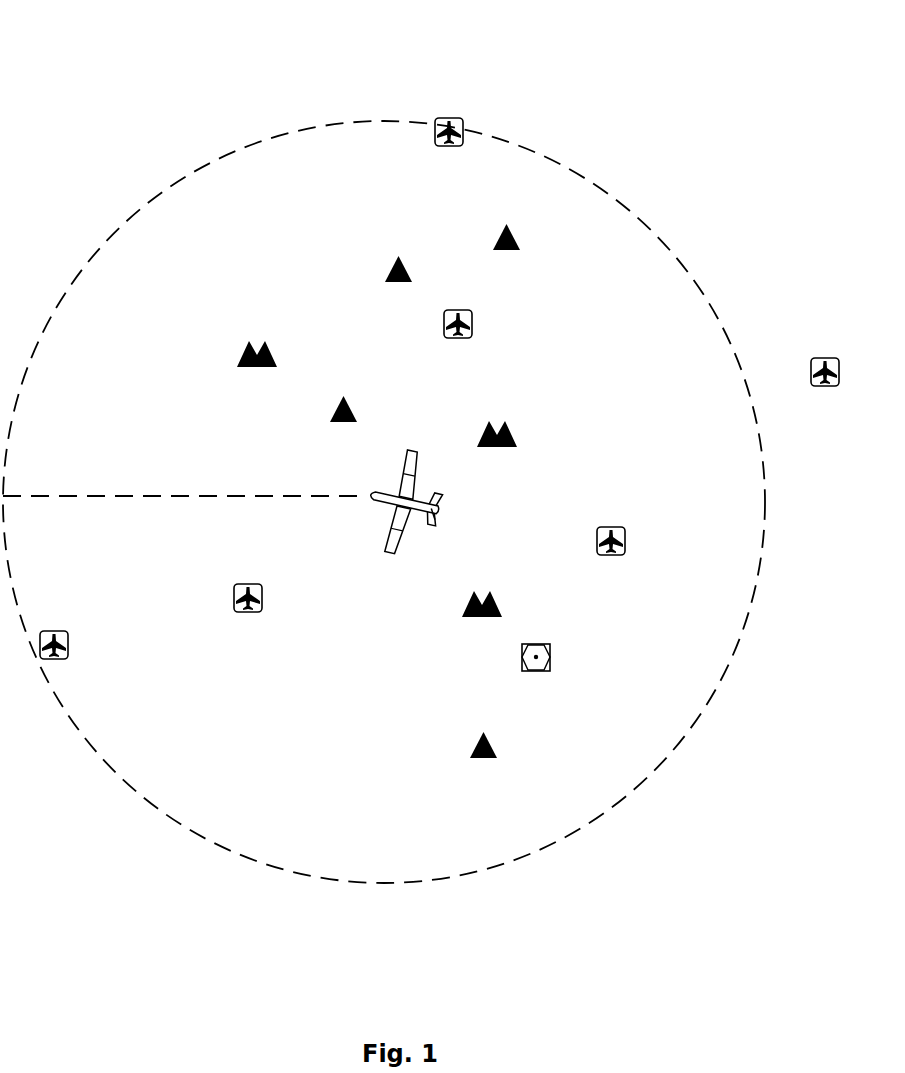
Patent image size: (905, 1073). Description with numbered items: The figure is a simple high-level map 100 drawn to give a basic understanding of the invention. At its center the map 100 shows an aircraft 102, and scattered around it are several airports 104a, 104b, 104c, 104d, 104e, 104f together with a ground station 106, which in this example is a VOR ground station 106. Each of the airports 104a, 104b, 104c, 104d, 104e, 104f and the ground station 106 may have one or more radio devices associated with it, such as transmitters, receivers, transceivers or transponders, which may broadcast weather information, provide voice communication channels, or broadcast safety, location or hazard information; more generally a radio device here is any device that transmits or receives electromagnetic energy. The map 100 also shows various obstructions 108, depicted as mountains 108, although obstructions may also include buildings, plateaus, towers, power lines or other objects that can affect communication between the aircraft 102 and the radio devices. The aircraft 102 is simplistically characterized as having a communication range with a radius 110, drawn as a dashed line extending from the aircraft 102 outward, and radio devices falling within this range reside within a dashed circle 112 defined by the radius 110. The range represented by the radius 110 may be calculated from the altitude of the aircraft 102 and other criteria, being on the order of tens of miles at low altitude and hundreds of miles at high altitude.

The map 100 is at (194, 80).
The aircraft 102 is at (401, 506).
The airport 104a is at (445, 121).
The airport 104b is at (453, 311).
The airport 104c is at (829, 387).
The airport 104d is at (603, 529).
The airport 104e is at (255, 586).
The airport 104f is at (61, 634).
The ground station 106 is at (536, 652).
The obstructions 108 is at (343, 398).
The radius 110 is at (175, 496).
The circle 112 is at (348, 124).